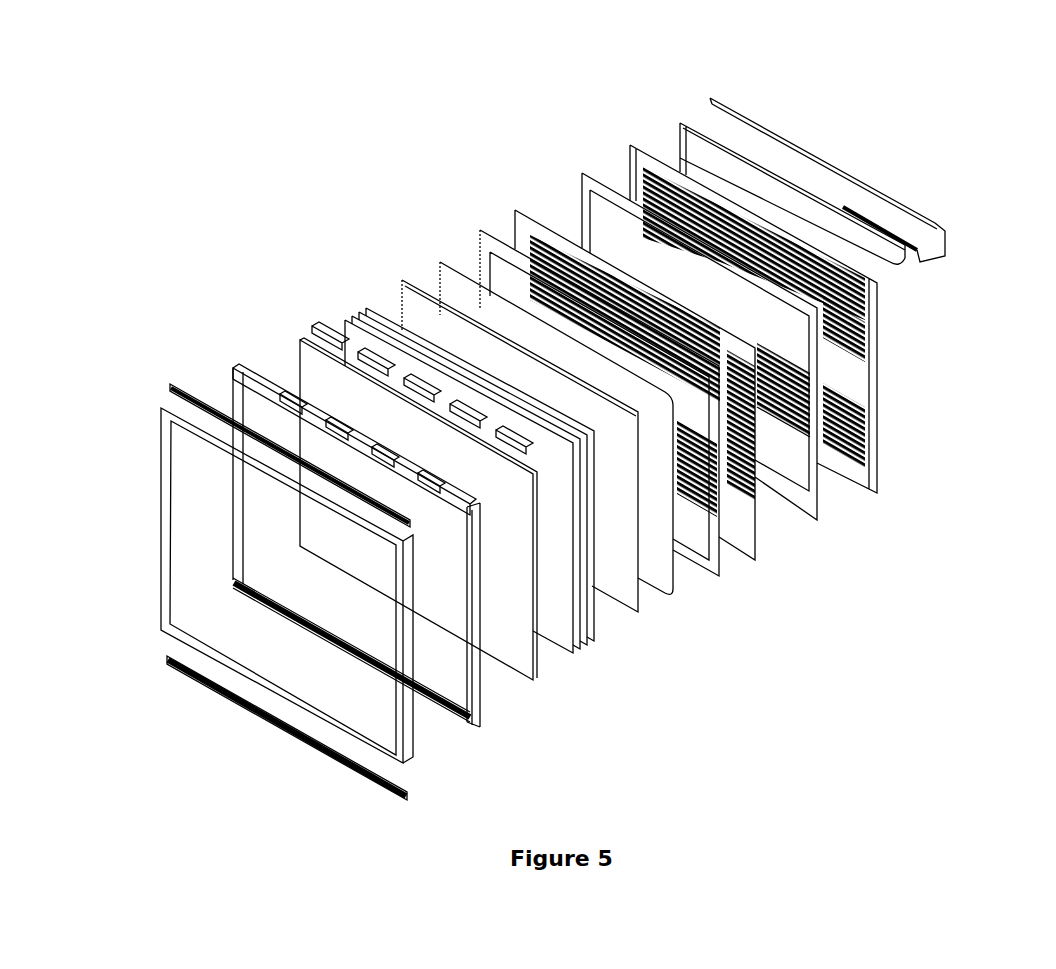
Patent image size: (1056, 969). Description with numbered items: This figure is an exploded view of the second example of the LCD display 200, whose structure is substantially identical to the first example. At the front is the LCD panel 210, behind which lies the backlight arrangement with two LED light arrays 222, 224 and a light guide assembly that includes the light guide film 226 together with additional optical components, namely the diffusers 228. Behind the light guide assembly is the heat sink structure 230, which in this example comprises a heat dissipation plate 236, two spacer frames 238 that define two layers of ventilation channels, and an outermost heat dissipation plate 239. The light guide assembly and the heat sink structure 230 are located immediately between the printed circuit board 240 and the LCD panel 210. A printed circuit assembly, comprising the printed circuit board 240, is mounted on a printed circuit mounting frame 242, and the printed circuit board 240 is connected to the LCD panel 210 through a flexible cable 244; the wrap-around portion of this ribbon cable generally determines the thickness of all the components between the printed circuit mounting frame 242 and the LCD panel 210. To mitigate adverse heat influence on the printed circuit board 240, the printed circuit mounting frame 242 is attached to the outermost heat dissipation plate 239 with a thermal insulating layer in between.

The LCD display 200 is at (122, 192).
The LCD panel 210 is at (300, 342).
The LED light array 222 is at (175, 388).
The LED light array 224 is at (238, 697).
The light guide film 226 is at (637, 613).
The diffuser 228 is at (612, 654).
The heat sink structure 230 is at (892, 498).
The heat dissipation plate 236 is at (515, 210).
The spacer frame 238 is at (482, 232).
The outermost heat dissipation plate 239 is at (632, 145).
The printed circuit board 240 is at (479, 726).
The printed circuit mounting frame 242 is at (947, 240).
The flexible cable 244 is at (318, 330).